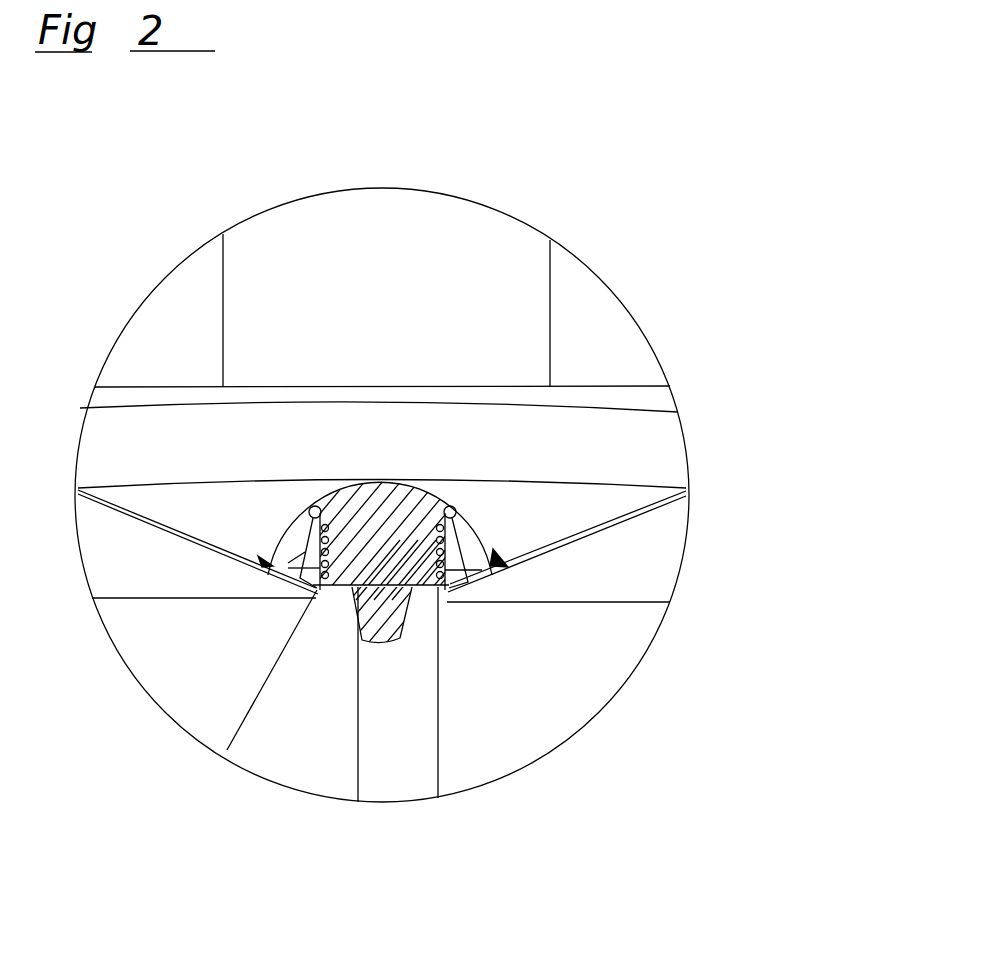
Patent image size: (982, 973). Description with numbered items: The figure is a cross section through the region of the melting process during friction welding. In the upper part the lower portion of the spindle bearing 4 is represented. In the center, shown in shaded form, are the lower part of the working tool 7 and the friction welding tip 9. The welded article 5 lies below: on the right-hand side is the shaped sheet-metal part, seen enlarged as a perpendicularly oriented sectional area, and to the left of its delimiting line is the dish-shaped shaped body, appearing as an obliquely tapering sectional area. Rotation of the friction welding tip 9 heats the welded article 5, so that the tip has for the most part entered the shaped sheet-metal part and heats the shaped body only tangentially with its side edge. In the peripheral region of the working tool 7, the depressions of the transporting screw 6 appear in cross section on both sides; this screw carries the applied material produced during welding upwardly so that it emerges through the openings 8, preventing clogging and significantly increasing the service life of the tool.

The spindle bearing 4 is at (148, 435).
The welded article 5 is at (308, 742).
The transporting screw 6 is at (447, 577).
The working tool 7 is at (377, 538).
The openings 8 is at (207, 543).
The friction welding tip 9 is at (390, 618).